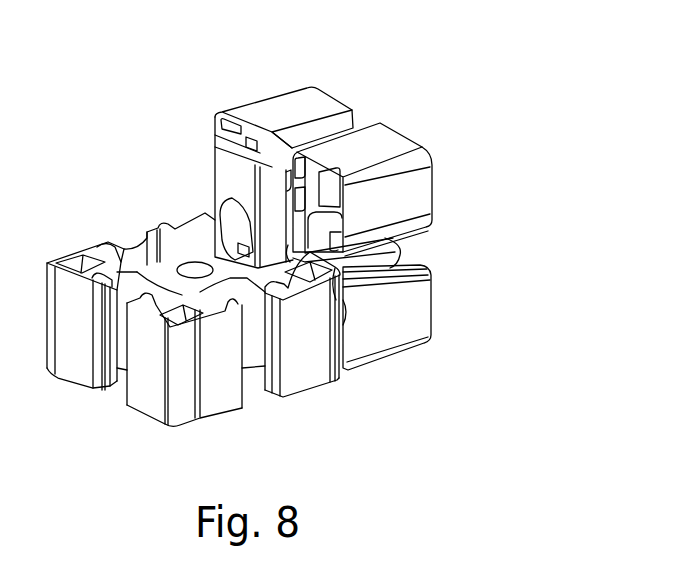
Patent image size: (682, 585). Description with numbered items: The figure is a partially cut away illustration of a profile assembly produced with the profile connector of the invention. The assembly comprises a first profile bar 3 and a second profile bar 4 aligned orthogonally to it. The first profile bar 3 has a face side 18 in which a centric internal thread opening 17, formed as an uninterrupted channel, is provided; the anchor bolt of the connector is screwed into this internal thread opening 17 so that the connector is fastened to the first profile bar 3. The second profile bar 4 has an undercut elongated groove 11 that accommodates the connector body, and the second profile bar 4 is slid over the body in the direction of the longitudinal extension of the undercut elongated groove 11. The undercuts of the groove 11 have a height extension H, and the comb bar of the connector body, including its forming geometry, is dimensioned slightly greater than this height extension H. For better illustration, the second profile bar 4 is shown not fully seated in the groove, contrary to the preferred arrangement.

The first profile bar 3 is at (320, 107).
The second profile bar 4 is at (210, 405).
The undercut elongated groove 11 is at (213, 247).
The centric internal thread opening 17 is at (428, 274).
The face side 18 is at (345, 212).
The height extension of the undercuts H is at (128, 294).